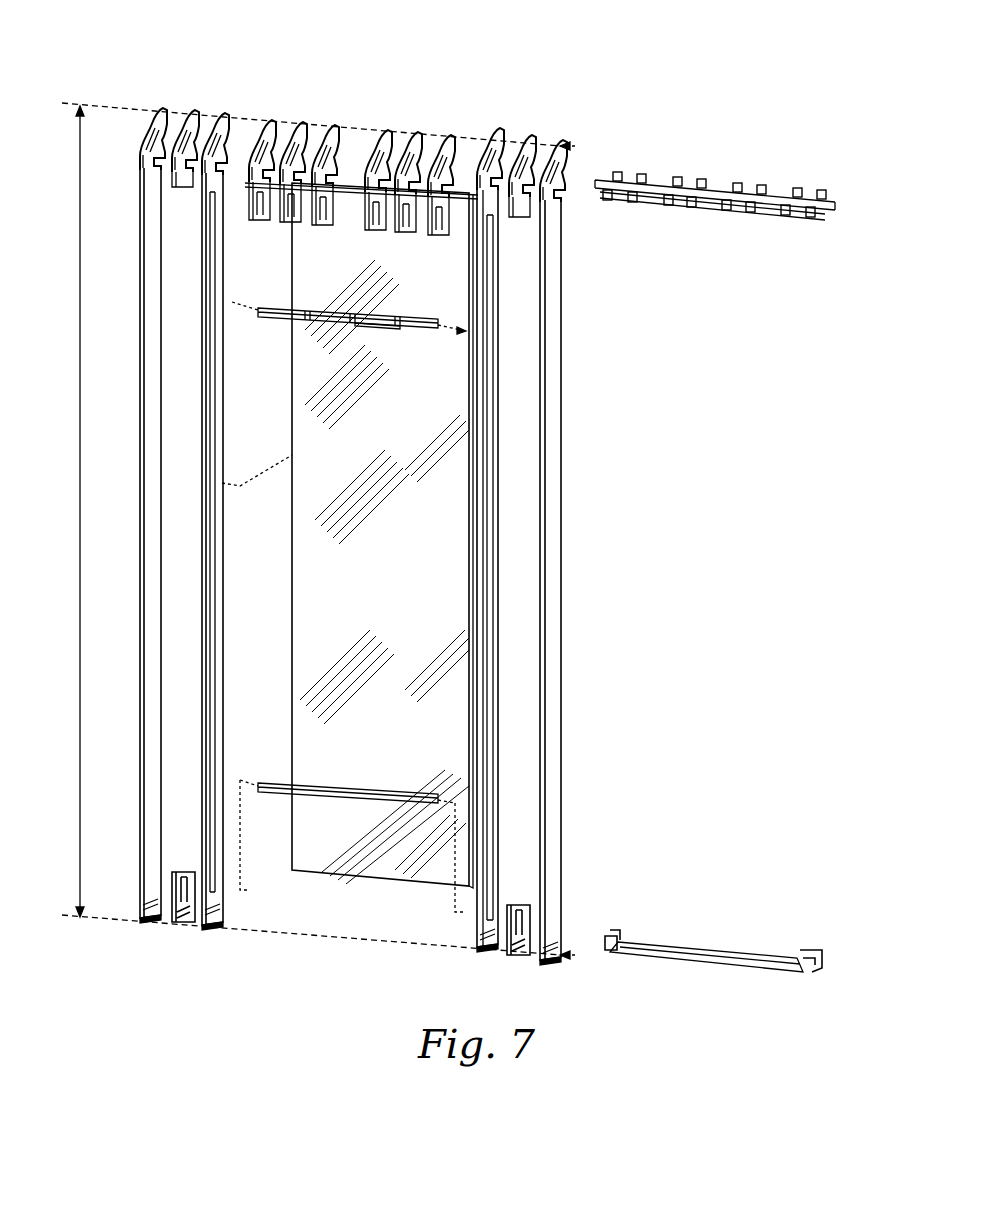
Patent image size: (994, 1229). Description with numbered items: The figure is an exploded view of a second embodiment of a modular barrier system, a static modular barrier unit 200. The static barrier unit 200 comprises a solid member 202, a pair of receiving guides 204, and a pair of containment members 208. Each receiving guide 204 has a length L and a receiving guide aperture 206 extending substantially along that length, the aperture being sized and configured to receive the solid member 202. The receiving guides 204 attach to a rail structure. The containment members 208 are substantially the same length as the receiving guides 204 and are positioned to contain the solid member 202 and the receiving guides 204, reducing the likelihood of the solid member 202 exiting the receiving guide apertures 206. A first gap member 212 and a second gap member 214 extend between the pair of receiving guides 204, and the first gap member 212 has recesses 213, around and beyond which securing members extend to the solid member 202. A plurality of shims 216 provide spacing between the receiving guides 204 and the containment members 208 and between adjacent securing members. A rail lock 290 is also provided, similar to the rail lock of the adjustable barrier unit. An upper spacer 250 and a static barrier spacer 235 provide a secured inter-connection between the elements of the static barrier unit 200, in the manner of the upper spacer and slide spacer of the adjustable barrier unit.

The static modular barrier unit 200 is at (645, 120).
The solid member 202 is at (440, 440).
The receiving guide 204 is at (493, 738).
The receiving guide aperture 206 is at (488, 672).
The containment member 208 is at (557, 876).
The first gap member 212 is at (413, 310).
The recesses 213 is at (378, 333).
The second gap member 214 is at (403, 800).
The shims 216 is at (410, 130).
The static barrier spacer 235 is at (697, 950).
The upper spacer 250 is at (740, 186).
The rail lock 290 is at (297, 128).